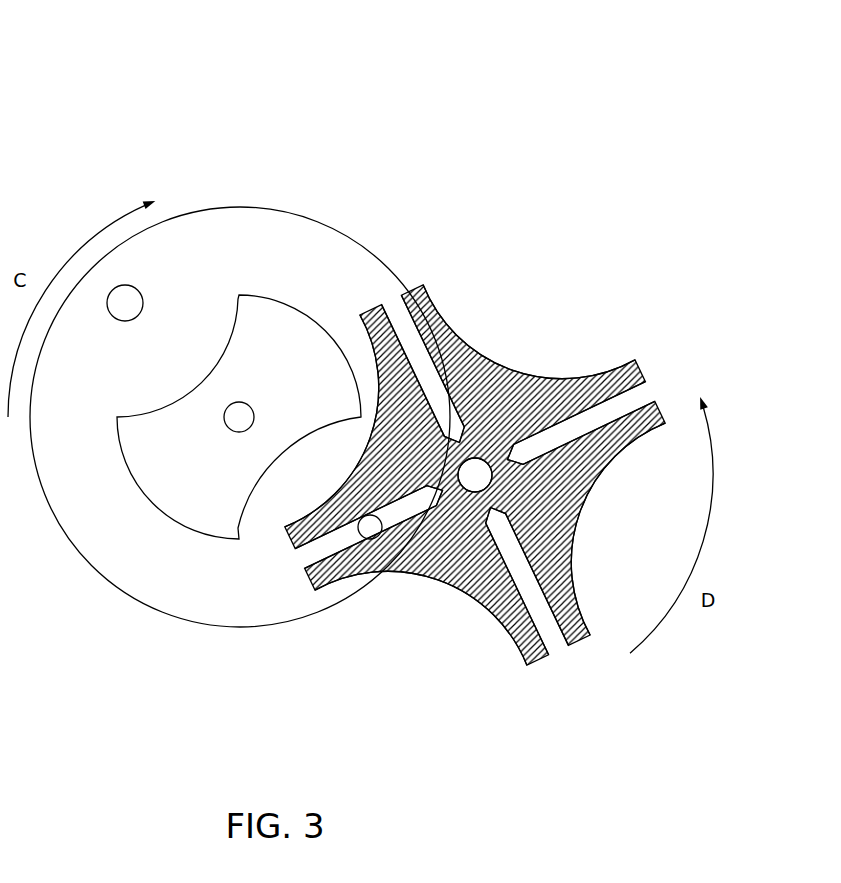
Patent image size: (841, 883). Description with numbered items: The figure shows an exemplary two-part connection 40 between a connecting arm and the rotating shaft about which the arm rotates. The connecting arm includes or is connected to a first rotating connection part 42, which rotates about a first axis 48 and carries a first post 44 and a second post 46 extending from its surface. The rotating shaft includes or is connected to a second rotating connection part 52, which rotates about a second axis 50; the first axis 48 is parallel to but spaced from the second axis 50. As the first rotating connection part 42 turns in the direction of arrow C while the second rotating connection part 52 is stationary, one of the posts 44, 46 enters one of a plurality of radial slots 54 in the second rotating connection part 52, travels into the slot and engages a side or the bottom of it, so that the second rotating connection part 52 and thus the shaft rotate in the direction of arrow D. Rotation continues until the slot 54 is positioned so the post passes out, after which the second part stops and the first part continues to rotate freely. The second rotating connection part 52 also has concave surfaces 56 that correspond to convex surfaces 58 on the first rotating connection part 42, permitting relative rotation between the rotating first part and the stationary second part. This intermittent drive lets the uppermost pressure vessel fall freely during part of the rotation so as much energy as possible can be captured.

The two-part connection 40 is at (100, 122).
The first rotating connection part 42 is at (276, 207).
The first post 44 is at (127, 321).
The second post 46 is at (358, 537).
The first axis 48 is at (238, 432).
The second axis 50 is at (476, 474).
The second rotating connection part 52 is at (575, 373).
The radial slots 54 is at (403, 297).
The concave surfaces 56 is at (572, 372).
The convex surfaces 58 is at (279, 296).